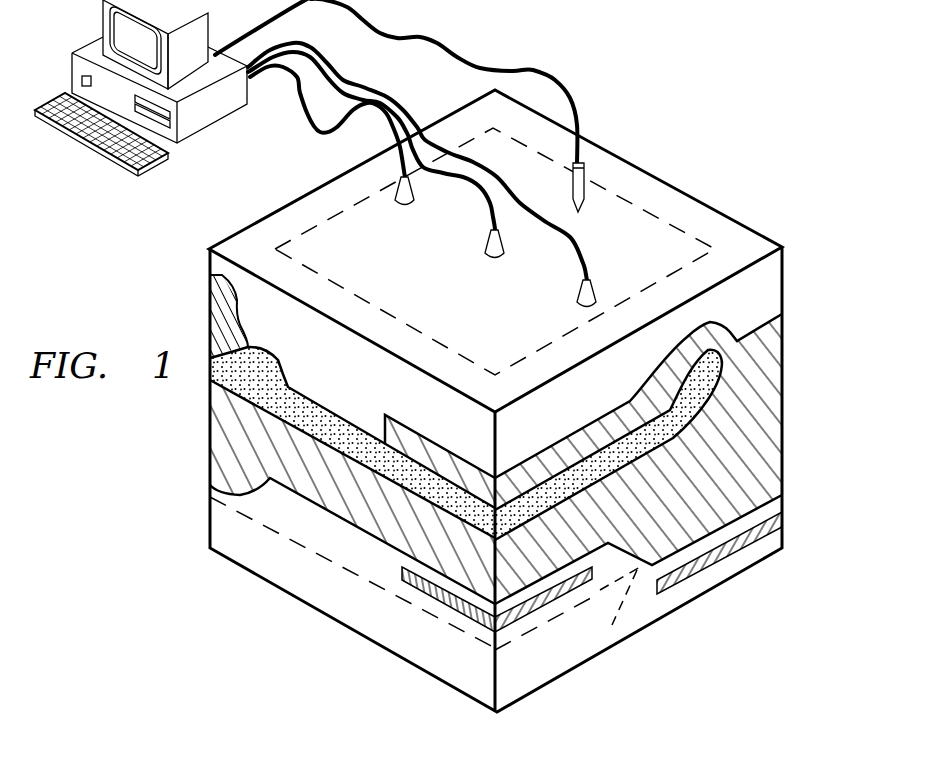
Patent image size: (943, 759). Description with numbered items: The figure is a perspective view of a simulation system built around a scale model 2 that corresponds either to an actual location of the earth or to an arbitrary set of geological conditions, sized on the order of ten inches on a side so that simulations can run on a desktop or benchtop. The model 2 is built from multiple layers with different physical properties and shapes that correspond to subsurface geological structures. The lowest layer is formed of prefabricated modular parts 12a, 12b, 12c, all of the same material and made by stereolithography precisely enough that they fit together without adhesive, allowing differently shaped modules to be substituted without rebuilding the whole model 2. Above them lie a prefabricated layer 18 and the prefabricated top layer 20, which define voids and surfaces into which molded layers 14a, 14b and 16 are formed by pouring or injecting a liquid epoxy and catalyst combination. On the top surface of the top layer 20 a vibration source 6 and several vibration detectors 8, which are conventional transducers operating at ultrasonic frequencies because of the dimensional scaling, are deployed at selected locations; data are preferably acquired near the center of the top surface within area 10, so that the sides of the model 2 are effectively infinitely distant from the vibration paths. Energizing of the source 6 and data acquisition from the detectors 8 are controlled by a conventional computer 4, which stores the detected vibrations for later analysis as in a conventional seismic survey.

The scale model 2 is at (792, 250).
The computer 4 is at (82, 24).
The vibration source 6 is at (586, 207).
The vibration detector 8 is at (396, 204).
The area 10 is at (673, 225).
The prefabricated modular part 12a is at (708, 582).
The prefabricated modular part 12b is at (550, 678).
The prefabricated modular part 12c is at (612, 625).
The molded layer 14a is at (750, 544).
The molded layer 14b is at (547, 594).
The molded layer 16 is at (762, 457).
The prefabricated layer 18 is at (647, 455).
The top layer 20 is at (588, 412).